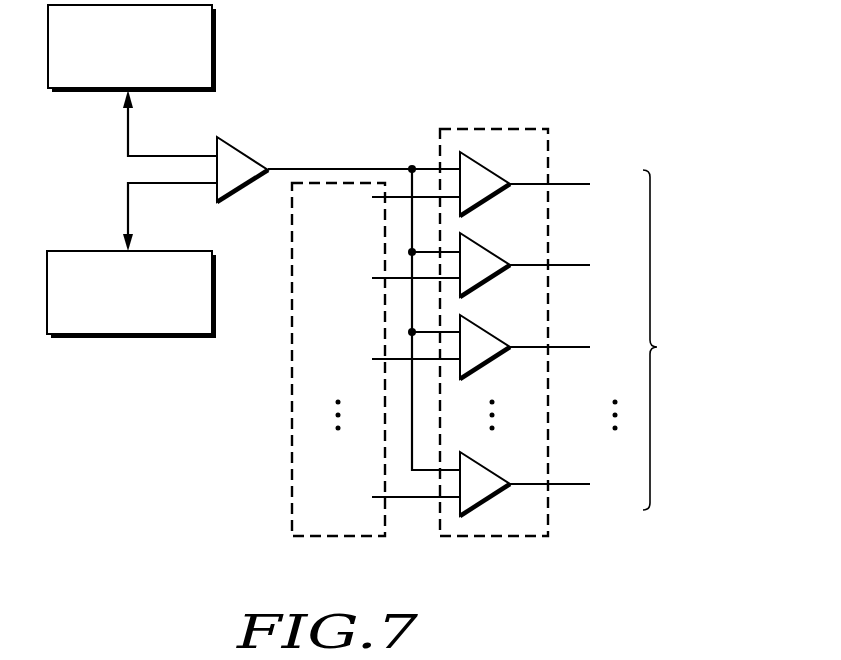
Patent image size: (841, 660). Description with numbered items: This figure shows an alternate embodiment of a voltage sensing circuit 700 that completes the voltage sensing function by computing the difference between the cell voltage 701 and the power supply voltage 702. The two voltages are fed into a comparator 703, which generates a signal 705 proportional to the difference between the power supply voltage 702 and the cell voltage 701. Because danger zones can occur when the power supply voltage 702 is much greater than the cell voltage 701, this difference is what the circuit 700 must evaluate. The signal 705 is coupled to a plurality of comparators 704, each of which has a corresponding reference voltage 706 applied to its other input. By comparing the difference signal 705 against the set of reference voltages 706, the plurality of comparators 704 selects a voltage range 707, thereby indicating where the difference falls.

The circuit 700 is at (213, 565).
The cell voltage 701 is at (83, 251).
The power supply voltage 702 is at (215, 28).
The comparator 703 is at (240, 151).
The plurality of comparators 704 is at (502, 128).
The signal 705 is at (328, 168).
The reference voltage 706 is at (291, 420).
The voltage range 707 is at (703, 372).